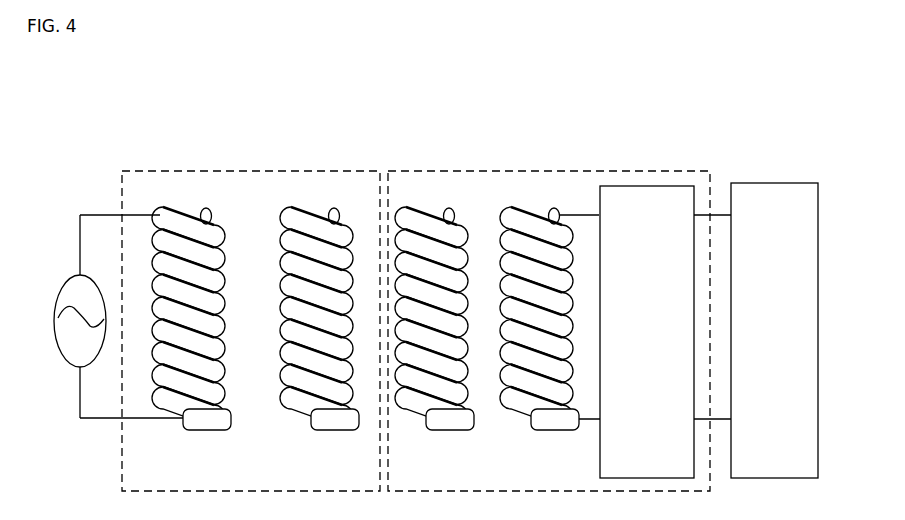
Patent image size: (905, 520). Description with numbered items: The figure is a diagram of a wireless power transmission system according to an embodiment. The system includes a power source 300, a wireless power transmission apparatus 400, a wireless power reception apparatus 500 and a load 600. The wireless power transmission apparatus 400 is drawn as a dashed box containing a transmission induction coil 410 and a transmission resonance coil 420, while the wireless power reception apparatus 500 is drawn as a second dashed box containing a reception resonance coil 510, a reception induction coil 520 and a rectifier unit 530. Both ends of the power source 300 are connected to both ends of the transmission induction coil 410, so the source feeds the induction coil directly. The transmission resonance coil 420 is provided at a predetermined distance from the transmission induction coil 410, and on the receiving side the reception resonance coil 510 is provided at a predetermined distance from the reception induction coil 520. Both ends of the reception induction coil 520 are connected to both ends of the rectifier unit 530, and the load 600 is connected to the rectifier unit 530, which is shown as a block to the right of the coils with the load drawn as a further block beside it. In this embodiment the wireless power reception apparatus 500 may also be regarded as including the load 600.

The power source 300 is at (64, 289).
The wireless power transmission apparatus 400 is at (148, 171).
The transmission induction coil 410 is at (191, 213).
The transmission resonance coil 420 is at (317, 212).
The wireless power reception apparatus 500 is at (482, 171).
The reception resonance coil 510 is at (432, 211).
The reception induction coil 520 is at (537, 212).
The rectifier unit 530 is at (647, 186).
The load 600 is at (778, 183).